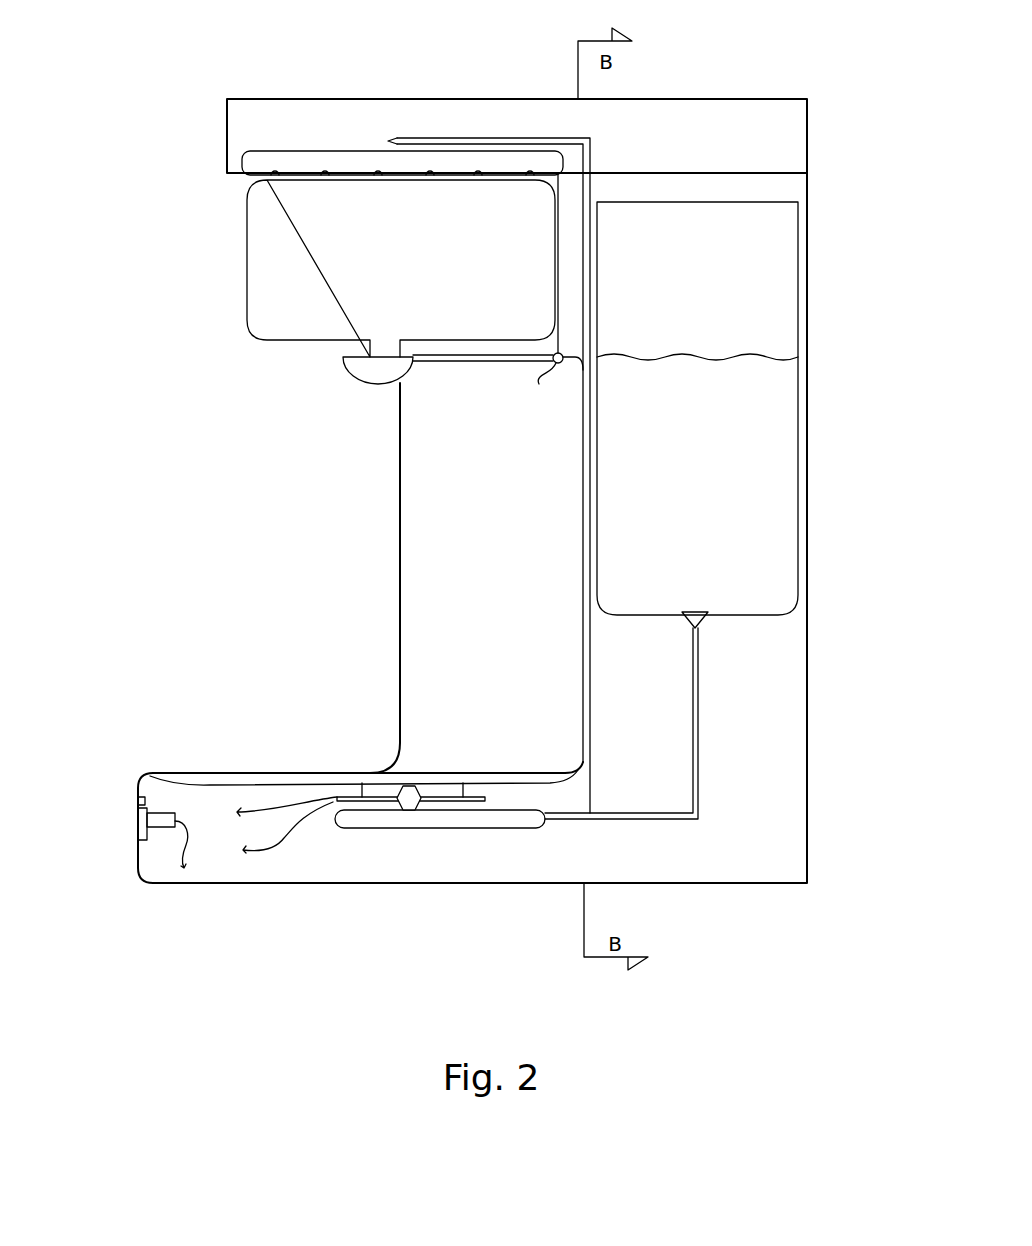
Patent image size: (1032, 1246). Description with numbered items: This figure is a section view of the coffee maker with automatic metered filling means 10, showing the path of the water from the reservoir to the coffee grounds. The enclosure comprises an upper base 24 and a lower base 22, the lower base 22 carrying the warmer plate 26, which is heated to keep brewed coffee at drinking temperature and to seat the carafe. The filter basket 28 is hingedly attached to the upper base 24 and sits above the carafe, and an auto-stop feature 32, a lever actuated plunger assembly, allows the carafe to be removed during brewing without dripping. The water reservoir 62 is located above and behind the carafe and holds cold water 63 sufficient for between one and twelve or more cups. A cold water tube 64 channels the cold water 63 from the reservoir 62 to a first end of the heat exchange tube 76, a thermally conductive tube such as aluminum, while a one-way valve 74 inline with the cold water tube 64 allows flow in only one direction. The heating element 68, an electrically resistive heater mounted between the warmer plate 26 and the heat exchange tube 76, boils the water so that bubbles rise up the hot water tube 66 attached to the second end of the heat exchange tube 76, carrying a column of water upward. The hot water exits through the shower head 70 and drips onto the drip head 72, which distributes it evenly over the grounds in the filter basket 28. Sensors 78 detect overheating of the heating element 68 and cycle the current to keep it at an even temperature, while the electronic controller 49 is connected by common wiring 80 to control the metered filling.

The coffee maker with automatic metered filling means 10 is at (160, 997).
The lower base 22 is at (140, 823).
The upper base 24 is at (512, 97).
The warmer plate 26 is at (197, 777).
The filter basket 28 is at (268, 258).
The auto-stop feature 32 is at (350, 381).
The electronic controller 49 is at (151, 816).
The water reservoir 62 is at (750, 312).
The cold water 63 is at (787, 355).
The cold water tube 64 is at (698, 793).
The hot water tube 66 is at (488, 137).
The heating element 68 is at (402, 811).
The shower head 70 is at (397, 142).
The drip head 72 is at (247, 163).
The one-way valve 74 is at (700, 620).
The heat exchange tube 76 is at (470, 826).
The sensors 78 is at (373, 796).
The wiring 80 is at (266, 848).